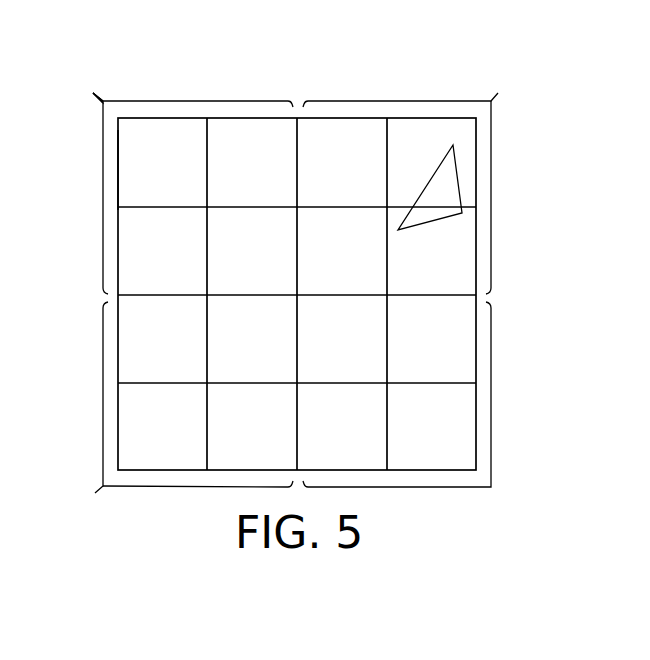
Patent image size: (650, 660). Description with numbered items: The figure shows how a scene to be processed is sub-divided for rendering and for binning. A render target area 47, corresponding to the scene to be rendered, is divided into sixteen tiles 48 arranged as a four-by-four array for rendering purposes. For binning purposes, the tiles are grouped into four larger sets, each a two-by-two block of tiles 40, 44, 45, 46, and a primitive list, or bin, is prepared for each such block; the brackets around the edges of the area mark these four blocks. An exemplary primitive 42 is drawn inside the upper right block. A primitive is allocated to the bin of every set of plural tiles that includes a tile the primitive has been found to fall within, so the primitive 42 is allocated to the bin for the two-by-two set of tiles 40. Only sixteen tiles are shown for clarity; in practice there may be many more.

The 2×2 block of tiles 40 is at (498, 99).
The primitive 42 is at (457, 167).
The 2×2 block of tiles 44 is at (491, 487).
The 2×2 block of tiles 45 is at (179, 408).
The 2×2 block of tiles 46 is at (179, 184).
The render target area 47 is at (170, 85).
The tiles 48 is at (118, 170).